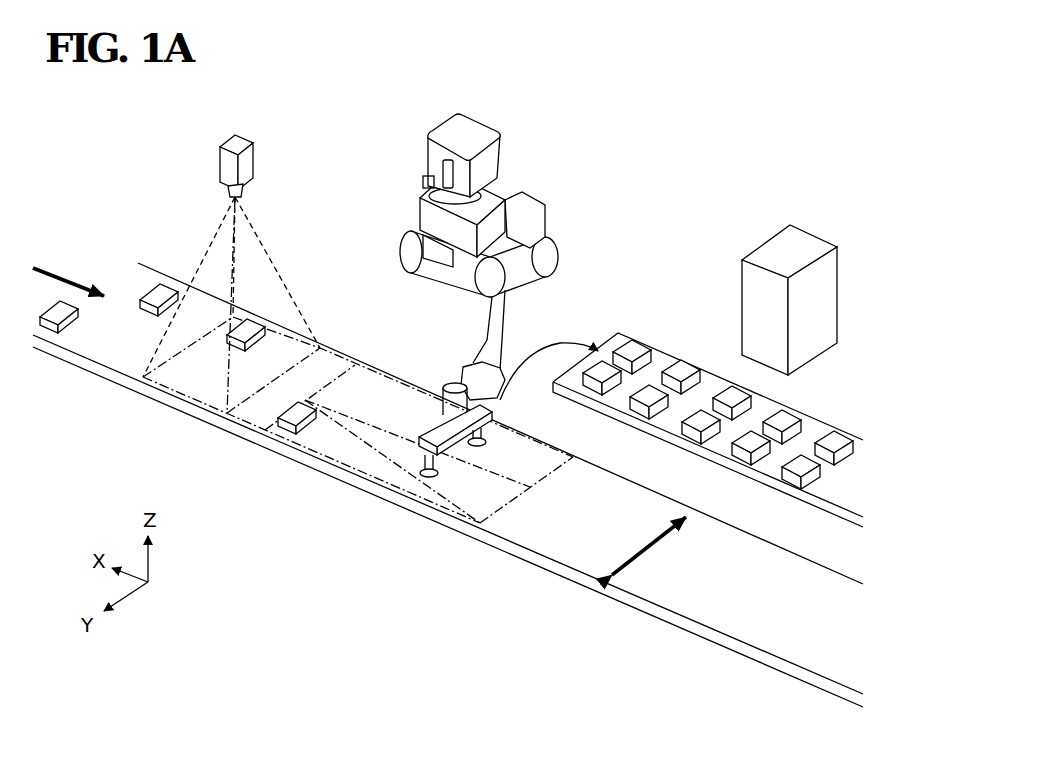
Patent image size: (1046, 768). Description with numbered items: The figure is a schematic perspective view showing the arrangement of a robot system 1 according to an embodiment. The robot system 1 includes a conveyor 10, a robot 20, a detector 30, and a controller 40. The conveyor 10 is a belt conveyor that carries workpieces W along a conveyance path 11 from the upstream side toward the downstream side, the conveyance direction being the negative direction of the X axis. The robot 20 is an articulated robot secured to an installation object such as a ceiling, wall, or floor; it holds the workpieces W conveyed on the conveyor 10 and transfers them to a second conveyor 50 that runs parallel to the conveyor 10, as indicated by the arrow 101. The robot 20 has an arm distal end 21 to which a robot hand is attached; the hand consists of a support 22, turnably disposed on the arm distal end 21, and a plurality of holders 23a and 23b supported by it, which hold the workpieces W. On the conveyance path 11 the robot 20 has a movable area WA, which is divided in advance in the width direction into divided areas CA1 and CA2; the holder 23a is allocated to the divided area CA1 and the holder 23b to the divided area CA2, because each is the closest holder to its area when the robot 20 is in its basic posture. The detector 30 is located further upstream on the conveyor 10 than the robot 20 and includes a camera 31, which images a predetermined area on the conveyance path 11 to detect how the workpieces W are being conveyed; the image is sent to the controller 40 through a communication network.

The robot system 1 is at (662, 100).
The conveyor 10 is at (124, 218).
The conveyance path 11 is at (150, 272).
The robot 20 is at (510, 154).
The arm distal end 21 is at (455, 388).
The support 22 is at (437, 430).
The holder 23a is at (425, 465).
The holder 23b is at (479, 434).
The detector 30 is at (231, 245).
The camera 31 is at (247, 163).
The controller 40 is at (807, 244).
The conveyor 50 is at (666, 332).
The arrow 101 is at (558, 344).
The workpiece W is at (287, 412).
The movable area WA is at (328, 363).
The divided area CA1 is at (374, 447).
The divided area CA2 is at (378, 386).